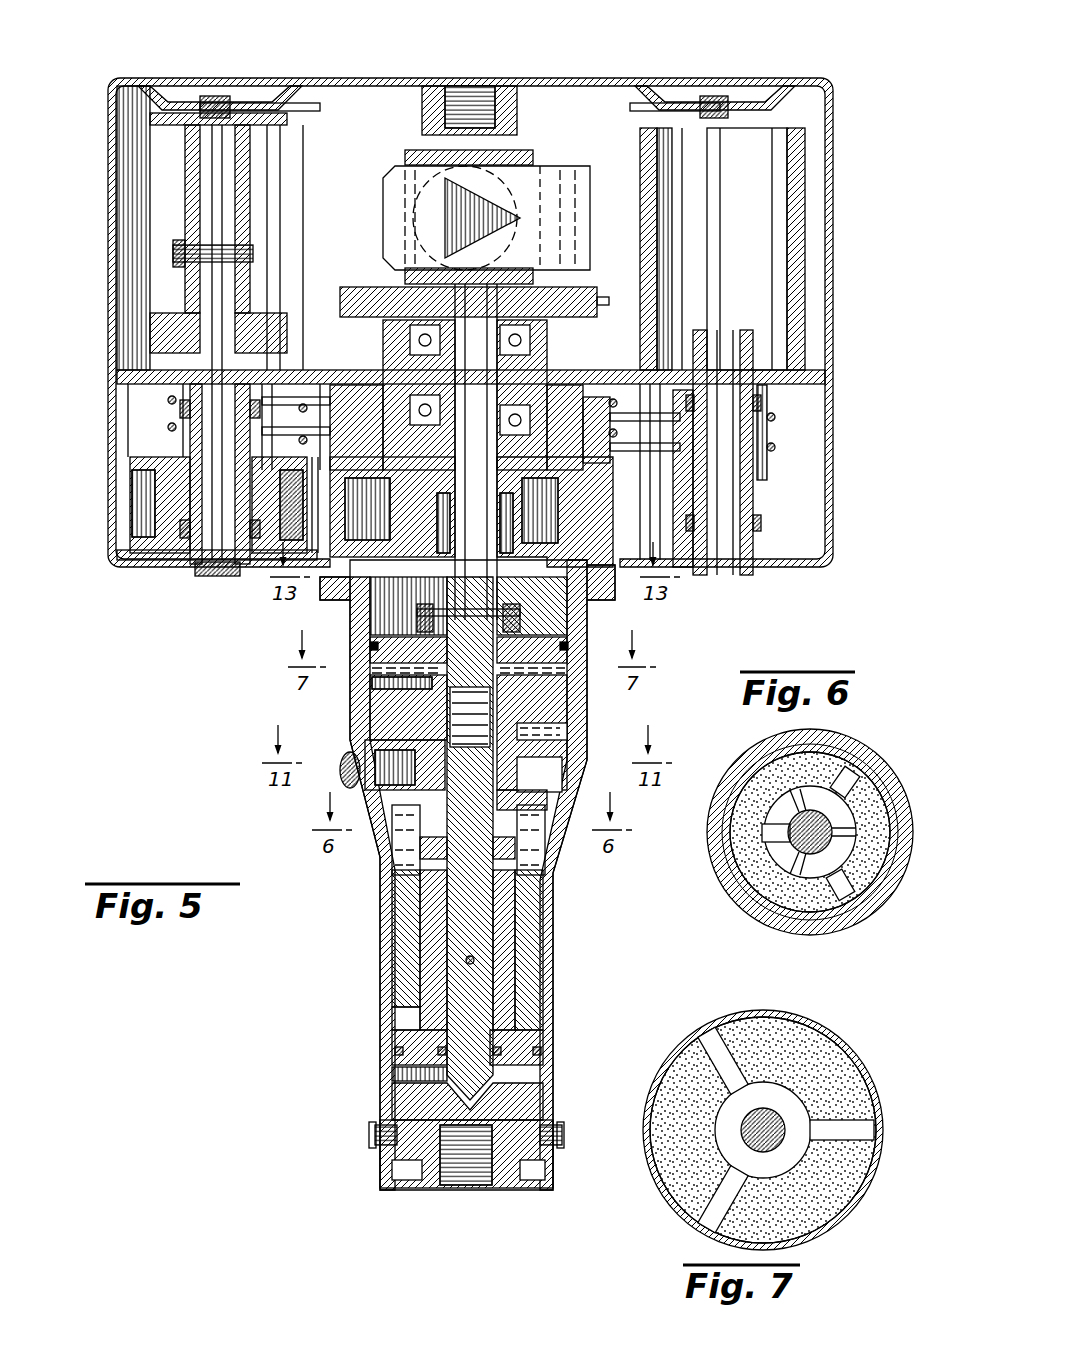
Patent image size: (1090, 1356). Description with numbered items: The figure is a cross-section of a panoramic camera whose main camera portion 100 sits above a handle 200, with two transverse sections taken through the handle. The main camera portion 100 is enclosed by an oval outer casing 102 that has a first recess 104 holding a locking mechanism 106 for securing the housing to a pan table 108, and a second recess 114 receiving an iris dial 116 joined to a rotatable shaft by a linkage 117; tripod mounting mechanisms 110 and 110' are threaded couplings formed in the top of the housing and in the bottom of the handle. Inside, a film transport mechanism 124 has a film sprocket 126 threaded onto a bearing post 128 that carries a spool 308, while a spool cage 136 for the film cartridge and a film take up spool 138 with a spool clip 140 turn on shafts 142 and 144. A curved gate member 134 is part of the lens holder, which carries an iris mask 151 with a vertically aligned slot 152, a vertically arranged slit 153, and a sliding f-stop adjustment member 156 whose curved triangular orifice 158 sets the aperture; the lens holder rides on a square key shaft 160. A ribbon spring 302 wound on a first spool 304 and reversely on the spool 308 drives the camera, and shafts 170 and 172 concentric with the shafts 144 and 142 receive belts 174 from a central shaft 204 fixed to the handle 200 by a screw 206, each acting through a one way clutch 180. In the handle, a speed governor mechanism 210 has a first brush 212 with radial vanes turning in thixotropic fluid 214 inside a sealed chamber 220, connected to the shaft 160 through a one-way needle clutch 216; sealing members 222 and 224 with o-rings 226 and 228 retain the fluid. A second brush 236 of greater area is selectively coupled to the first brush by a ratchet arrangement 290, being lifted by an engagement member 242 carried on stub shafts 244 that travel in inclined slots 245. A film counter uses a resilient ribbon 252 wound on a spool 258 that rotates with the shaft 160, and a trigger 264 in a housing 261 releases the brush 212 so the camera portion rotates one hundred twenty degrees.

In FIG. 5, the main camera portion 100 is at (838, 322).
In FIG. 5, the outer casing 102 is at (830, 172).
In FIG. 5, the first recess 104 is at (243, 74).
In FIG. 5, the locking mechanism 106 is at (192, 84).
In FIG. 5, the pan table 108 is at (165, 567).
In FIG. 5, the tripod mounting mechanism 110 is at (509, 73).
In FIG. 5, the tripod mounting mechanism 110' is at (481, 1193).
In FIG. 5, the second recess 114 is at (748, 80).
In FIG. 5, the dial 116 is at (722, 95).
In FIG. 5, the linkage 117 is at (312, 103).
In FIG. 5, the film transport mechanism 124 is at (180, 187).
In FIG. 5, the film sprocket 126 is at (590, 290).
In FIG. 5, the bearing post 128 is at (500, 367).
In FIG. 5, the curved gate member 134 is at (500, 205).
In FIG. 5, the spool cage 136 is at (795, 240).
In FIG. 5, the film take up spool 138 is at (162, 322).
In FIG. 5, the spool clip 140 is at (185, 215).
In FIG. 5, the shaft 142 is at (720, 400).
In FIG. 5, the shaft 144 is at (215, 440).
In FIG. 5, the iris mask 151 is at (555, 150).
In FIG. 5, the vertically aligned slot 152 is at (430, 205).
In FIG. 5, the vertically arranged slit 153 is at (470, 155).
In FIG. 5, the f-stop adjustment member 156 is at (395, 235).
In FIG. 5, the curved triangular orifice 158 is at (505, 226).
In FIG. 5, the square key shaft 160 is at (405, 347).
In FIG. 5, the shaft 170 is at (114, 420).
In FIG. 5, the shaft 172 is at (772, 432).
In FIG. 5, the belt 174 is at (303, 437).
In FIG. 5, the one way clutch 180 is at (200, 384).
In FIG. 5, the handle 200 is at (558, 960).
In FIG. 6, the handle 200 is at (910, 792).
In FIG. 7, the handle 200 is at (655, 1208).
In FIG. 5, the central shaft 204 is at (610, 462).
In FIG. 5, the screw 206 is at (325, 596).
In FIG. 5, the speed governor mechanism 210 is at (568, 712).
In FIG. 7, the speed governor mechanism 210 is at (702, 1030).
In FIG. 5, the first brush 212 is at (372, 710).
In FIG. 7, the first brush 212 is at (835, 1125).
In FIG. 5, the fluid 214 is at (422, 840).
In FIG. 5, the one-way needle clutch 216 is at (495, 583).
In FIG. 5, the sealed chamber 220 is at (538, 843).
In FIG. 5, the sealing member 222 is at (492, 617).
In FIG. 5, the sealing member 224 is at (410, 1043).
In FIG. 5, the sealing o-ring 226 is at (580, 643).
In FIG. 5, the sealing o-ring 228 is at (545, 1053).
In FIG. 5, the second brush 236 is at (530, 992).
In FIG. 6, the second brush 236 is at (790, 915).
In FIG. 5, the engagement member 242 is at (410, 1100).
In FIG. 5, the stub shaft 244 is at (377, 1136).
In FIG. 5, the inclined slot 245 is at (375, 1147).
In FIG. 5, the resilient ribbon 252 is at (400, 645).
In FIG. 5, the spool 258 is at (445, 563).
In FIG. 5, the housing 261 is at (585, 773).
In FIG. 5, the trigger 264 is at (345, 775).
In FIG. 6, the ratchet arrangement 290 is at (840, 808).
In FIG. 5, the ribbon spring 302 is at (150, 508).
In FIG. 5, the first spool 304 is at (185, 545).
In FIG. 5, the spool 308 is at (520, 548).